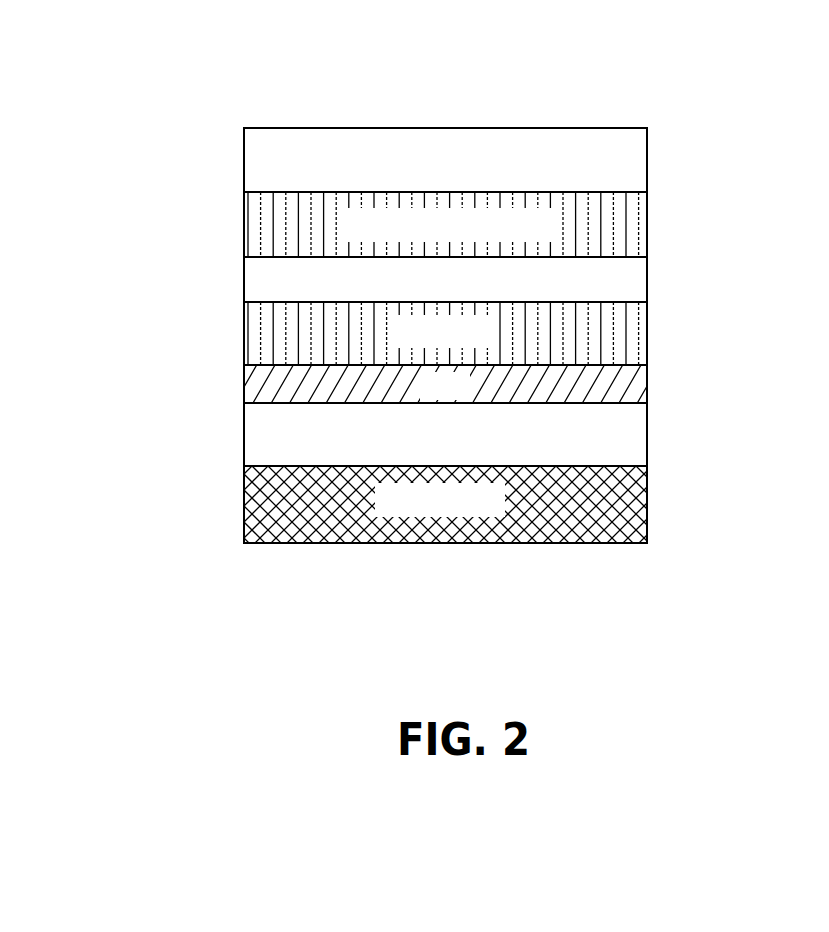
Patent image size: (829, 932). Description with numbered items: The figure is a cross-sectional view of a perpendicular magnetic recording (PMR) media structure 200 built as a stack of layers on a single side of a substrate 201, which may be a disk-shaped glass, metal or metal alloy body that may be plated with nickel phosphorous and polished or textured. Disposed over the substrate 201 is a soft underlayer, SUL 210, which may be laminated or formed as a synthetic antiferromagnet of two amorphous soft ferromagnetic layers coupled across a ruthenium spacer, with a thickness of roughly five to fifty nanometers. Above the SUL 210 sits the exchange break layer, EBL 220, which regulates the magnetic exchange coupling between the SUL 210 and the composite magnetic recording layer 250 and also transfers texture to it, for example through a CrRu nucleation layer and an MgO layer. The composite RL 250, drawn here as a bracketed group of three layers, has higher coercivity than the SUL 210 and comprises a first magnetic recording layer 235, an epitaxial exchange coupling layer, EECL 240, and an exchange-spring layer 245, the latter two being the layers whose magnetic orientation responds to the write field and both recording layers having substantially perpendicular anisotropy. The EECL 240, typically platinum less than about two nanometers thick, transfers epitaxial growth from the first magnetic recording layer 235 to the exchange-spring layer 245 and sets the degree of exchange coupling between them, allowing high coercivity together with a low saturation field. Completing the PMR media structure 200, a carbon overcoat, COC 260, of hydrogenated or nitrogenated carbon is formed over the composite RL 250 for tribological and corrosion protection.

The PMR media structure 200 is at (138, 94).
The substrate 201 is at (244, 505).
The SUL 210 is at (244, 436).
The exchange break layer 220 is at (244, 384).
The first magnetic recording layer 235 is at (244, 332).
The EECL 240 is at (244, 272).
The exchange-spring layer 245 is at (244, 217).
The composite magnetic recording layer 250 is at (655, 195).
The carbon overcoat 260 is at (244, 149).